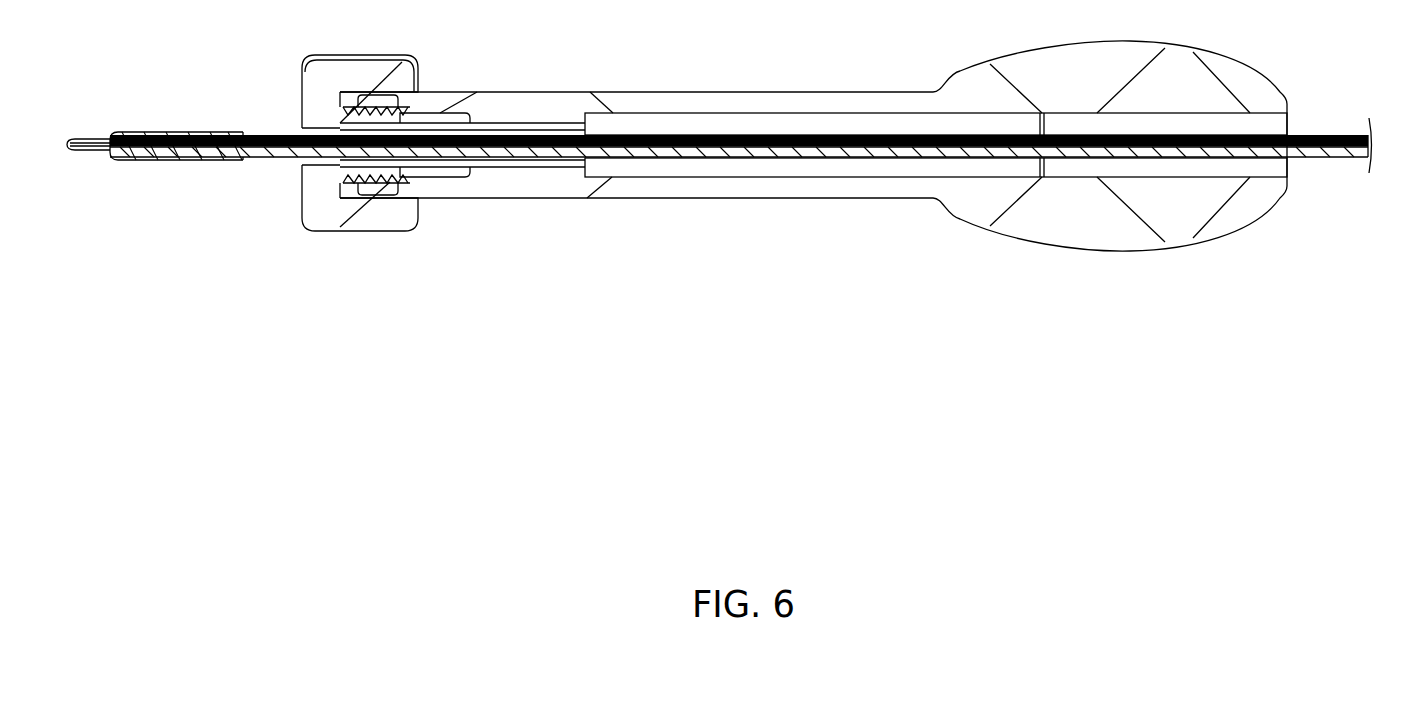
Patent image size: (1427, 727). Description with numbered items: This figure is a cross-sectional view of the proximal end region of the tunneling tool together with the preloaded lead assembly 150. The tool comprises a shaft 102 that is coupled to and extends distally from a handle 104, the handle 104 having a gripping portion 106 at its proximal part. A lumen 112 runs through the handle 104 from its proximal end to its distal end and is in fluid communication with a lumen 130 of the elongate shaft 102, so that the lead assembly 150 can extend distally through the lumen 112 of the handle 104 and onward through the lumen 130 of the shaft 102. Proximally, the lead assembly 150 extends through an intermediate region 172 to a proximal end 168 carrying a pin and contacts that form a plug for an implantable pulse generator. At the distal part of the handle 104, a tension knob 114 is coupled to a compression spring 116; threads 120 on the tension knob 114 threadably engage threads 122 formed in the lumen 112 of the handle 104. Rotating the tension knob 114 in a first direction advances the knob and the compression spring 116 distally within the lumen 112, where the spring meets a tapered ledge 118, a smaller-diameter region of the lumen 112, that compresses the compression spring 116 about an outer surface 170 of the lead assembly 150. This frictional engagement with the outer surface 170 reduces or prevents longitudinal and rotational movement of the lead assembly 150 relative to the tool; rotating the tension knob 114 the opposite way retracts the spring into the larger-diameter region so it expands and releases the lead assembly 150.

The shaft 102 is at (1342, 138).
The handle 104 is at (898, 262).
The gripping portion 106 is at (1087, 60).
The lumen 112 is at (543, 130).
The tension knob 114 is at (352, 65).
The compression spring 116 is at (435, 120).
The tapered ledge 118 is at (466, 176).
The threads 120 is at (373, 170).
The threads 122 is at (390, 188).
The lumen 130 is at (1295, 137).
The lead assembly 150 is at (215, 86).
The proximal end 168 is at (93, 138).
The outer surface 170 is at (563, 158).
The intermediate region 172 is at (1323, 148).